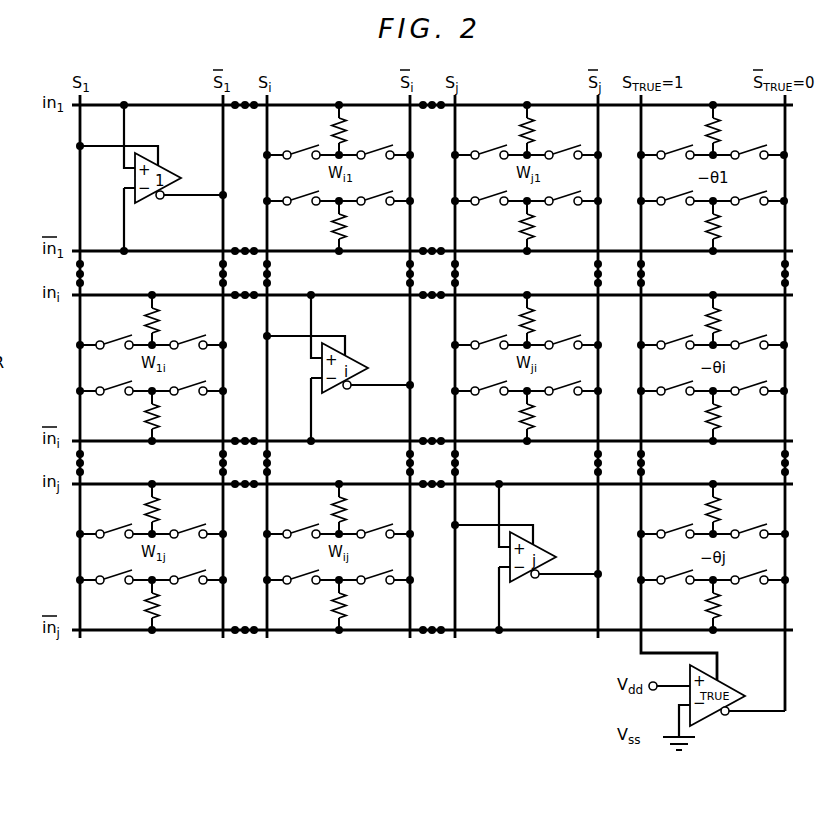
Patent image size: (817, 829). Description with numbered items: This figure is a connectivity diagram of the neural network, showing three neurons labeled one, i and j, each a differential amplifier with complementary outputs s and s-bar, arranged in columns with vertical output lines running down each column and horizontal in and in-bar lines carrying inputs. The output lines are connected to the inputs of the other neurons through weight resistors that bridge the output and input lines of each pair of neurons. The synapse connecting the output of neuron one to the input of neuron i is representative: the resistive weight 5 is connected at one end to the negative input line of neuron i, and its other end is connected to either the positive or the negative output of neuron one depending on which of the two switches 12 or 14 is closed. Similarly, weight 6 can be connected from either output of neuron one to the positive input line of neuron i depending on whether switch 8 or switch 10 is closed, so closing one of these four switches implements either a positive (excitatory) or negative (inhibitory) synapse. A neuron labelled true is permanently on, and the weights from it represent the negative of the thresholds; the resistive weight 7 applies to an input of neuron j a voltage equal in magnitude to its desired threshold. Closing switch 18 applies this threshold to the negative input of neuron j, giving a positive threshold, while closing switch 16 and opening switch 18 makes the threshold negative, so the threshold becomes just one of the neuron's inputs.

The resistive weight 5 is at (160, 417).
The resistive weight 6 is at (160, 320).
The resistive weight 7 is at (721, 600).
The switch 8 is at (118, 347).
The switch 10 is at (190, 347).
The switch 12 is at (118, 394).
The switch 14 is at (190, 395).
The switch 16 is at (764, 574).
The switch 18 is at (690, 571).